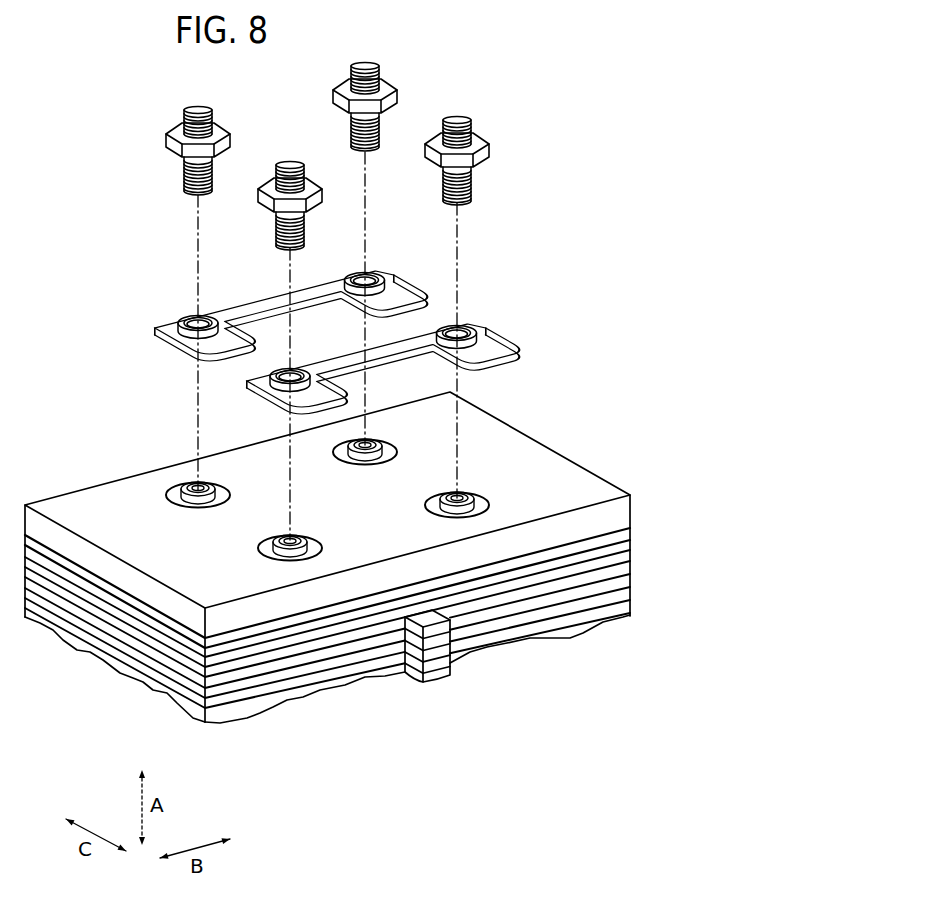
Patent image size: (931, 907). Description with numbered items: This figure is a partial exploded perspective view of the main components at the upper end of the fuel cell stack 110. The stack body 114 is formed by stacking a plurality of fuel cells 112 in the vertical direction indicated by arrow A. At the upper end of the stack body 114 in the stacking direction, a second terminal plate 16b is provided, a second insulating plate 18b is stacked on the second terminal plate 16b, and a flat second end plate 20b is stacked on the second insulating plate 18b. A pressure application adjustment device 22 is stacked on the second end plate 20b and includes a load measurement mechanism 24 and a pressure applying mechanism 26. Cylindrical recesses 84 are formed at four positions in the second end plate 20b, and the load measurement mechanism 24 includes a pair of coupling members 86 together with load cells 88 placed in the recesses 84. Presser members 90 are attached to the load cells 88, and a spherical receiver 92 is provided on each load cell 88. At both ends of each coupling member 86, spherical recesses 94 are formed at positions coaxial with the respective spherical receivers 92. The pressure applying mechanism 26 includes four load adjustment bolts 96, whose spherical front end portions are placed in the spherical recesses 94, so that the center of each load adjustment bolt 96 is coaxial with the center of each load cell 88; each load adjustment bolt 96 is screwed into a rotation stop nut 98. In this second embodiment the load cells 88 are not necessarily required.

The fuel cell stack 110 is at (389, 395).
The pressure application adjustment device 22 is at (484, 138).
The pressure applying mechanism 26 is at (398, 71).
The load adjustment bolt 96 is at (184, 175).
The rotation stop nut 98 is at (478, 159).
The coupling member 86 is at (327, 322).
The spherical recess 94 is at (205, 318).
The load measurement mechanism 24 is at (285, 530).
The recess 84 is at (260, 530).
The load cell 88 is at (323, 543).
The presser member 90 is at (272, 551).
The spherical receiver 92 is at (283, 541).
The second end plate 20b is at (608, 481).
The second insulating plate 18b is at (632, 530).
The second terminal plate 16b is at (632, 548).
The fuel cell 112 is at (634, 599).
The stack body 114 is at (389, 629).